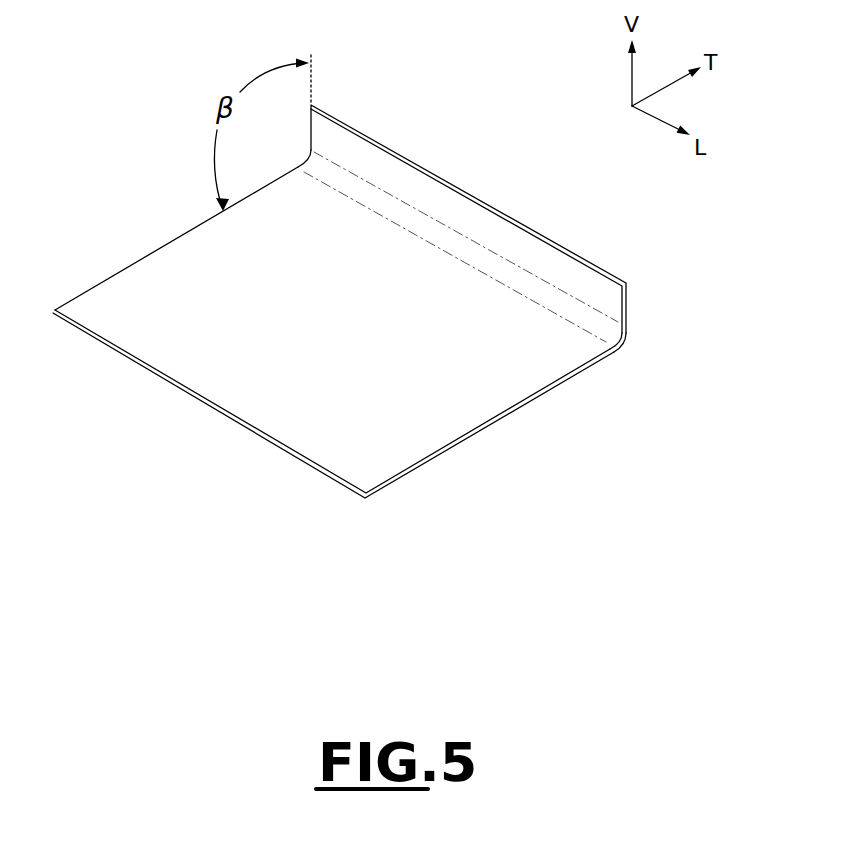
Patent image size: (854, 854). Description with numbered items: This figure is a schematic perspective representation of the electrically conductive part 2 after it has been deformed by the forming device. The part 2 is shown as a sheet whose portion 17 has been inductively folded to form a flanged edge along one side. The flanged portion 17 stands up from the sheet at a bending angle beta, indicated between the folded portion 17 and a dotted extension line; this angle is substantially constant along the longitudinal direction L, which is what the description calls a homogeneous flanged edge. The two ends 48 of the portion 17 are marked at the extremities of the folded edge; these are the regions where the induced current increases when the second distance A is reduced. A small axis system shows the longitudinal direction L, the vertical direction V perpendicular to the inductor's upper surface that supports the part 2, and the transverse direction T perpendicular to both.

The electrically conductive part 2 is at (112, 237).
The portion of the part 17 is at (457, 213).
The ends of the portion 48 is at (325, 138).